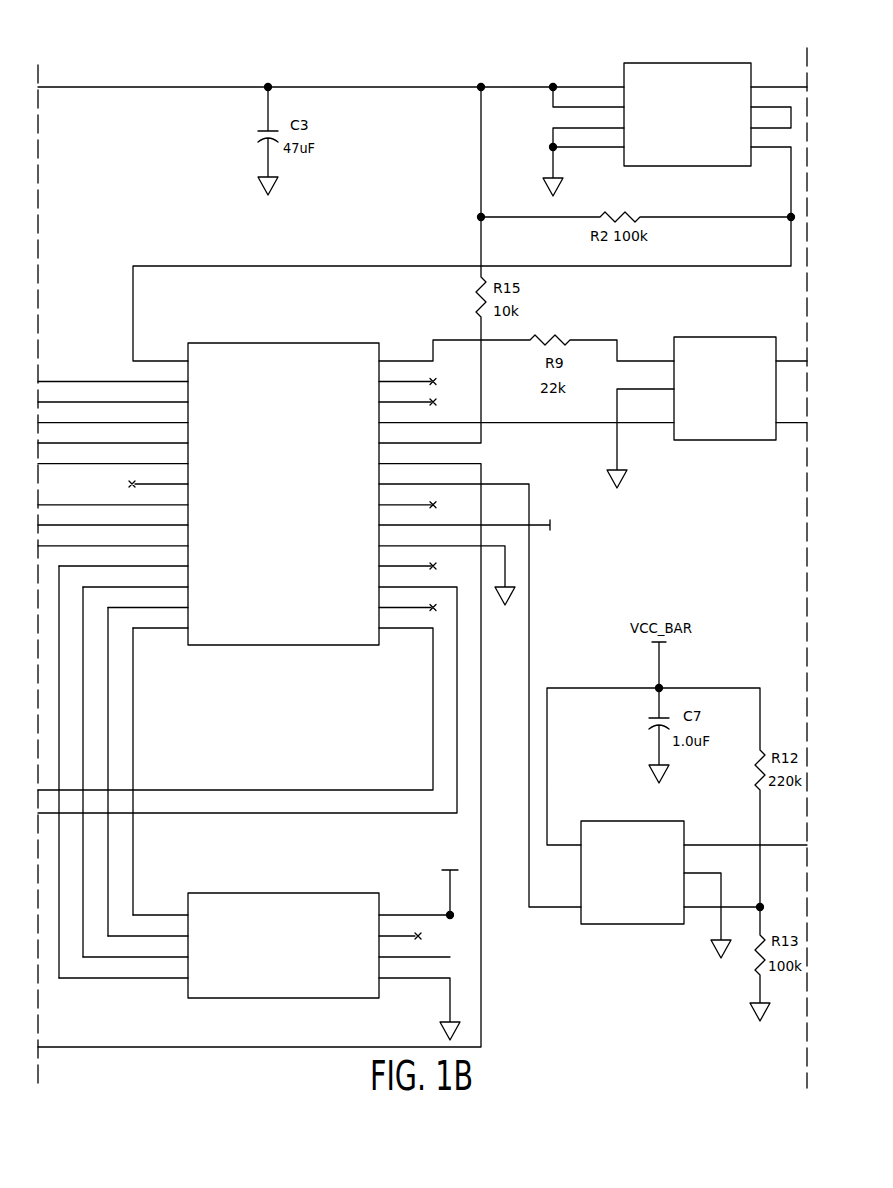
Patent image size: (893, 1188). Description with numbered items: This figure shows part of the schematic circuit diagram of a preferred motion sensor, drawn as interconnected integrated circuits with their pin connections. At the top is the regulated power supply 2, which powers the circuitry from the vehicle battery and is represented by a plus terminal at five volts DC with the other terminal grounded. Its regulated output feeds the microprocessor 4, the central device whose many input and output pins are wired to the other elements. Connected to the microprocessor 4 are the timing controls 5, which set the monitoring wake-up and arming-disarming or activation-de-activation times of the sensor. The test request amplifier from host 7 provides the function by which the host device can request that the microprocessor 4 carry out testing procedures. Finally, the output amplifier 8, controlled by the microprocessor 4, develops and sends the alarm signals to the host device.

The regulated power supply 2 is at (700, 63).
The microprocessor 4 is at (258, 343).
The timing controls 5 is at (259, 893).
The test request function 7 is at (585, 926).
The output amplifier 8 is at (676, 441).